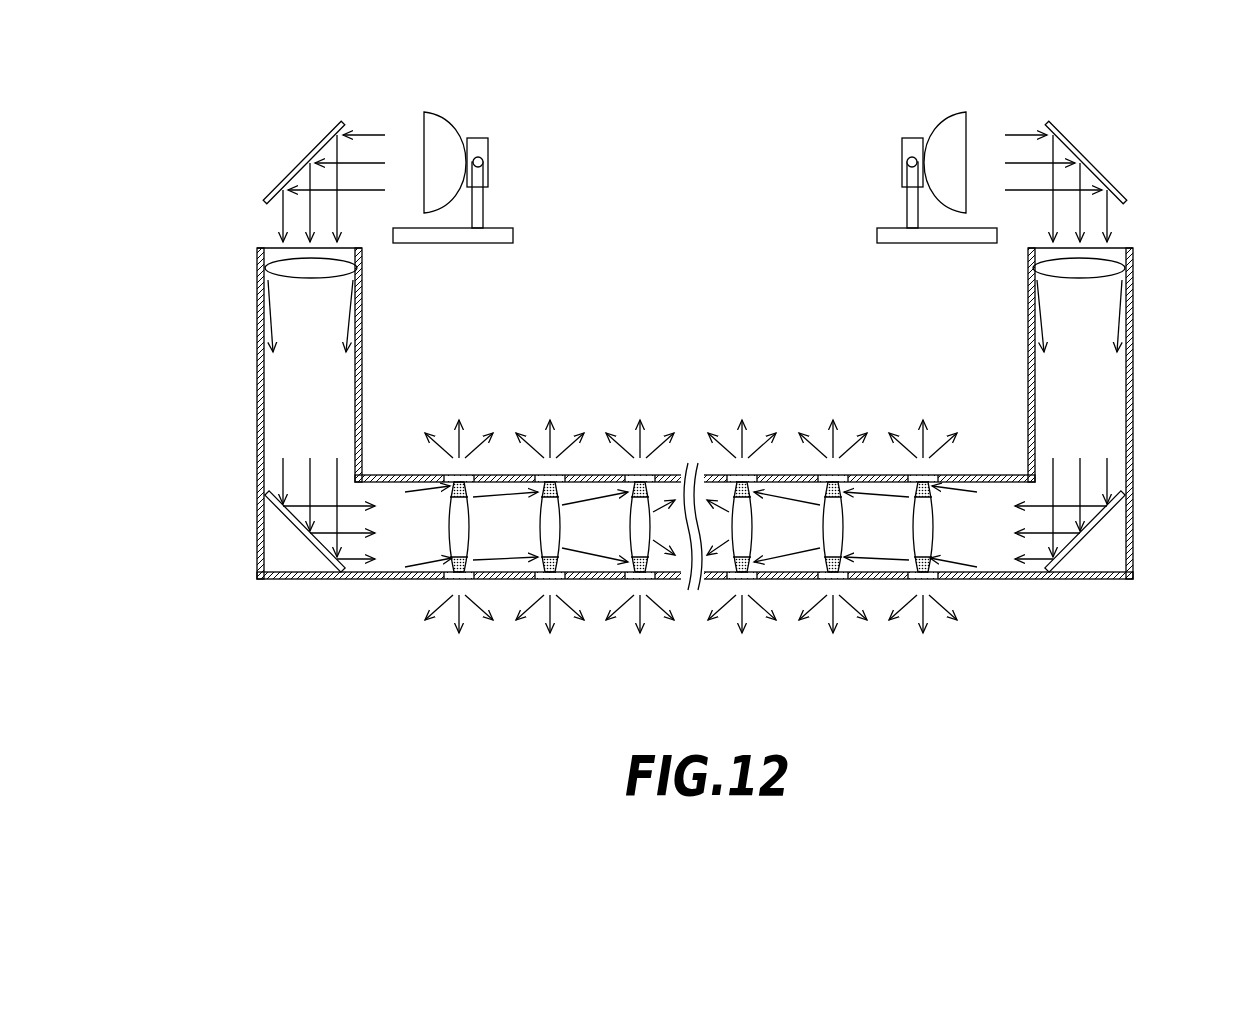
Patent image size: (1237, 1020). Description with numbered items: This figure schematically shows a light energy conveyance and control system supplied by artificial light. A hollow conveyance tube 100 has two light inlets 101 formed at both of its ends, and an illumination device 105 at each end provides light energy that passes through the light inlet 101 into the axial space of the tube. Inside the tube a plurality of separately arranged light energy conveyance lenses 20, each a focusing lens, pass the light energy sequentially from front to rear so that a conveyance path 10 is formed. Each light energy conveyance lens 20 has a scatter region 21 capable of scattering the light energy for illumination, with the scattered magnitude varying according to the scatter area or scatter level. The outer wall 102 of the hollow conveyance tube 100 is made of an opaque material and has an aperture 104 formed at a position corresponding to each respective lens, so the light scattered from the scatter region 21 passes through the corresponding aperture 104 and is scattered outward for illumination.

The conveyance path 10 is at (506, 568).
The light energy conveyance lens 20 is at (452, 520).
The scatter region 21 is at (737, 493).
The hollow conveyance tube 100 is at (362, 402).
The light inlet 101 is at (267, 247).
The outer wall 102 is at (1007, 580).
The aperture 104 is at (563, 473).
The illumination device 105 is at (447, 118).